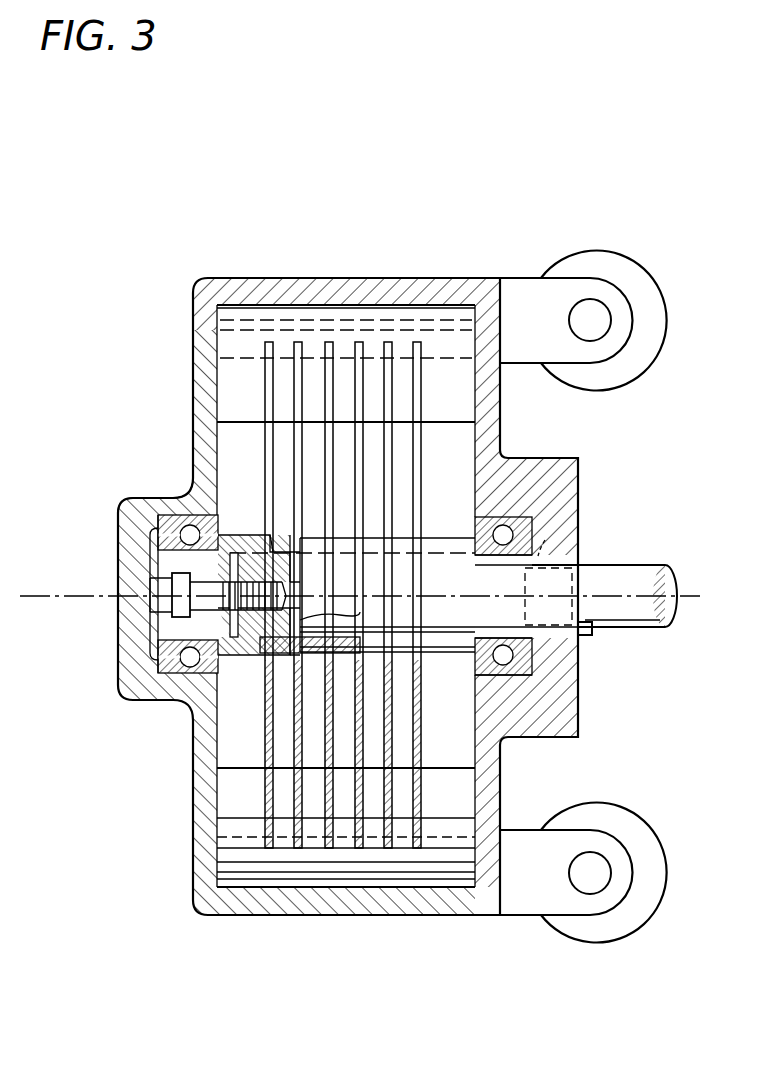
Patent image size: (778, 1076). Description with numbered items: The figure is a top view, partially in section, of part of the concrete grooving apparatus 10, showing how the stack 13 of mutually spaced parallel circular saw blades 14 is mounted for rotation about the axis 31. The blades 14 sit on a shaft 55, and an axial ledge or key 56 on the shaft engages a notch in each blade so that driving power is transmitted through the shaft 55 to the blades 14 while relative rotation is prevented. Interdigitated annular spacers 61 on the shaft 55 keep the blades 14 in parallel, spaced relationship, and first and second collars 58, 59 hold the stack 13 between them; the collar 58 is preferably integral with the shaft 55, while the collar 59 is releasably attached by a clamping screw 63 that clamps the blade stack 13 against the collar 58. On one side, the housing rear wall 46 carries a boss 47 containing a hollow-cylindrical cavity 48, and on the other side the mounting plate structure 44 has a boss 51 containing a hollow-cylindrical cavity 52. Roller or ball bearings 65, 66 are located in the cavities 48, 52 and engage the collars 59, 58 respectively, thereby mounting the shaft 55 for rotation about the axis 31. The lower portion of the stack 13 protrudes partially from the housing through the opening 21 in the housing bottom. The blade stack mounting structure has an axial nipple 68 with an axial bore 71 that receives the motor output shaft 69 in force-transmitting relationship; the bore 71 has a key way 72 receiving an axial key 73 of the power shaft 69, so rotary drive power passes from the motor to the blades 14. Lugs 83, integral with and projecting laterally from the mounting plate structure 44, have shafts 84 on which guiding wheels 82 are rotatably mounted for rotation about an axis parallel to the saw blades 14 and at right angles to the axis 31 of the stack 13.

The apparatus for grooving concrete 10 is at (170, 357).
The stack of saw blades 13 is at (250, 340).
The circular concrete saw blades 14 is at (269, 342).
The opening 21 is at (247, 775).
The axis 31 is at (60, 590).
The mounting plate 44 is at (500, 780).
The rear wall 46 is at (190, 795).
The boss 47 is at (120, 685).
The hollow-cylindrical cavity 48 is at (178, 515).
The boss 51 is at (582, 710).
The hollow-cylindrical cavity 52 is at (512, 675).
The shaft 55 is at (360, 612).
The axial ledge or key 56 is at (262, 655).
The first collar 58 is at (465, 542).
The second collar 59 is at (237, 648).
The annular spacers 61 is at (313, 537).
The clamping screw 63 is at (175, 606).
The roller or ball bearing 65 is at (220, 515).
The roller or ball bearing 66 is at (485, 672).
The axial nipple 68 is at (578, 560).
The motor output shaft 69 is at (650, 565).
The axial bore 71 is at (556, 534).
The key way 72 is at (582, 600).
The axial key 73 is at (592, 632).
The guiding wheels 82 is at (618, 252).
The lugs 83 is at (513, 283).
The shafts 84 is at (602, 322).